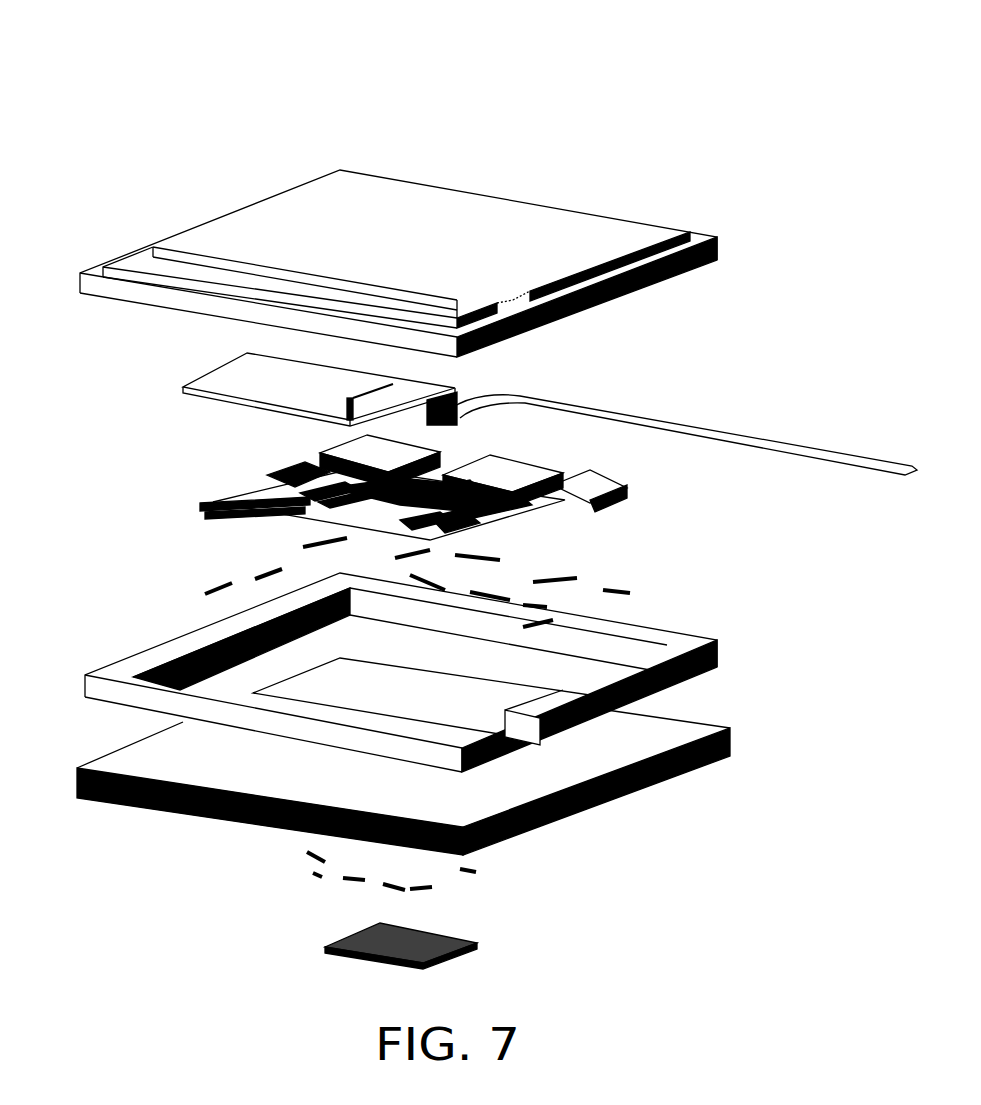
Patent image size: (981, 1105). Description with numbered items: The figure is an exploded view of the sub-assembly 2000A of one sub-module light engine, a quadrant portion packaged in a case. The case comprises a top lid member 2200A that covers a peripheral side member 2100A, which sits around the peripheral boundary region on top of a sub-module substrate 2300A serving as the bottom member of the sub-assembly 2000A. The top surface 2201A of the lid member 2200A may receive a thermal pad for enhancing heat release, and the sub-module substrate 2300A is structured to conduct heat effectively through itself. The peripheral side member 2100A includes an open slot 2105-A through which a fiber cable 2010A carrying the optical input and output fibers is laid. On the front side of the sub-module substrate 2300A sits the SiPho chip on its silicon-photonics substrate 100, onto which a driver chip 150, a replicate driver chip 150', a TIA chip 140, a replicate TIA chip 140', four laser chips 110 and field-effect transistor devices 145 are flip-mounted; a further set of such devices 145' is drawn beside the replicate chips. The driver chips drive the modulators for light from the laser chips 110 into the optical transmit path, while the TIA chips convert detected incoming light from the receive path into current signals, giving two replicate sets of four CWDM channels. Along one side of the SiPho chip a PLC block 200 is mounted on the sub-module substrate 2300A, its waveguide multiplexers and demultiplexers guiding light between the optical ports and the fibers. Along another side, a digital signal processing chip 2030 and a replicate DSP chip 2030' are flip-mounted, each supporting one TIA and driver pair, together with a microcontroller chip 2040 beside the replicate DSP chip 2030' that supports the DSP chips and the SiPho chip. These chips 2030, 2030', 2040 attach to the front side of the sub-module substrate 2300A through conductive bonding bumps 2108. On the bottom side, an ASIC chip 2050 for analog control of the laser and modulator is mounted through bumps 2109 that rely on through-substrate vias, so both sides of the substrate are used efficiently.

The sub-assembly 2000A is at (345, 64).
The top lid member 2200A is at (508, 263).
The top surface 2201A is at (537, 228).
The PLC block 200 is at (233, 378).
The fiber cable 2010A is at (725, 433).
The silicon-photonics substrate 100 is at (300, 522).
The laser chips 110 is at (303, 513).
The TIA chip 140 is at (201, 457).
The field-effect transistor devices 145 is at (261, 489).
The driver chip 150 is at (228, 480).
The digital signal processing (DSP) chip 2030 is at (267, 446).
The replicate digital signal processing (DSP) chip 2030' is at (589, 477).
The replicate TIA chip 140' is at (525, 524).
The conductive layer 145' is at (480, 540).
The replicate driver chip 150' is at (579, 535).
The microcontroller chip 2040 is at (583, 497).
The conductive bonding bumps 2108 is at (580, 580).
The peripheral side member 2100A is at (380, 706).
The open slot 2105-A is at (540, 740).
The sub-module substrate 2300A is at (140, 746).
The bumps 2109 is at (432, 888).
The ASIC chip 2050 is at (425, 938).